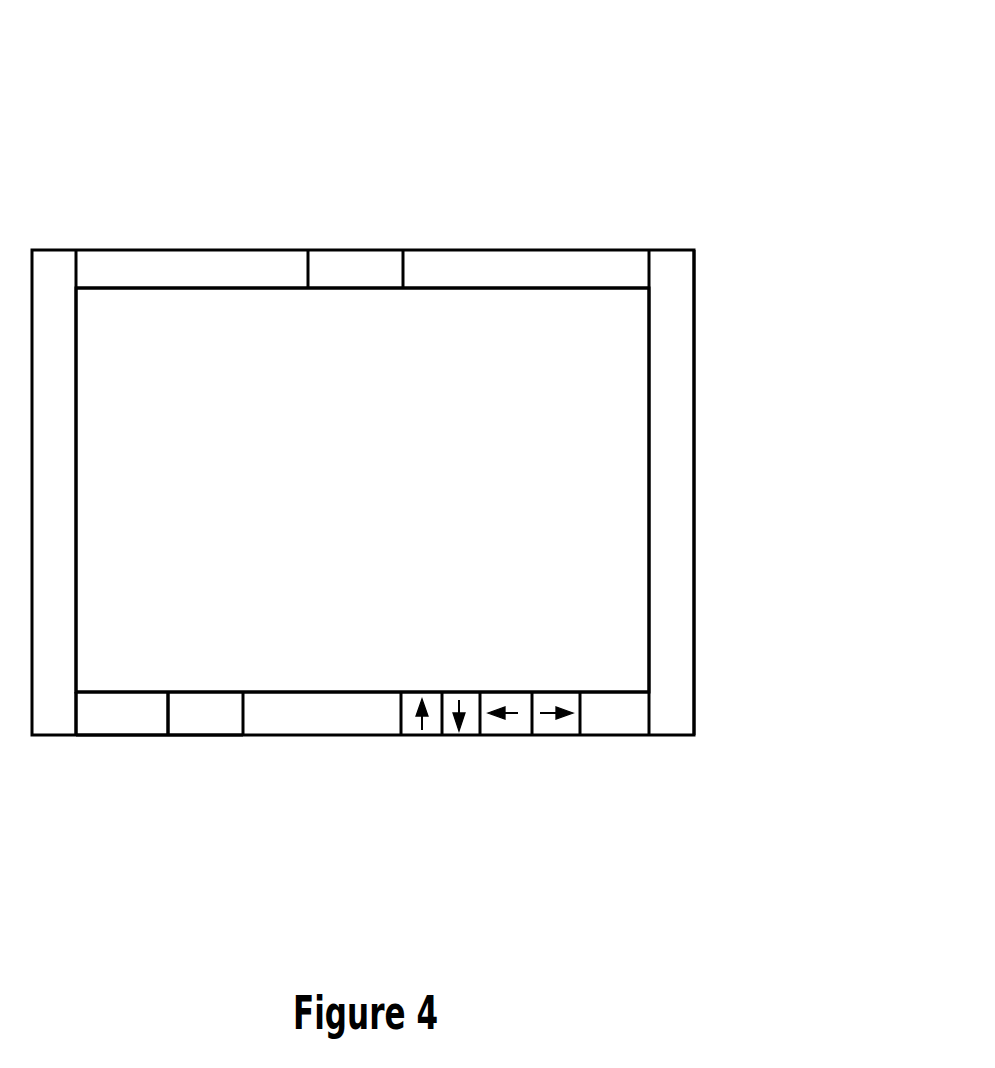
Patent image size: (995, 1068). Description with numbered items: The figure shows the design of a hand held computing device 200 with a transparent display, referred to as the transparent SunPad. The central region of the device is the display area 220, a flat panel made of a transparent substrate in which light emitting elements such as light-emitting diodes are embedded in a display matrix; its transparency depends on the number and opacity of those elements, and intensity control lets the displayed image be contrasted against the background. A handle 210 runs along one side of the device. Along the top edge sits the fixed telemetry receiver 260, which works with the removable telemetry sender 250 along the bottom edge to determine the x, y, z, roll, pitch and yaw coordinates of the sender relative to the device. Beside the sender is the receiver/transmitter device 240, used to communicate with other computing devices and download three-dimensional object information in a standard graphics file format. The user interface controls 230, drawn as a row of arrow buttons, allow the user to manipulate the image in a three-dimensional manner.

The hand held computing device 200 is at (500, 101).
The handle 210 is at (694, 420).
The display area 220 is at (362, 490).
The user interface controls 230 is at (400, 742).
The receiver/transmitter device 240 is at (205, 737).
The removable telemetry sender 250 is at (130, 737).
The fixed telemetry receiver 260 is at (353, 249).